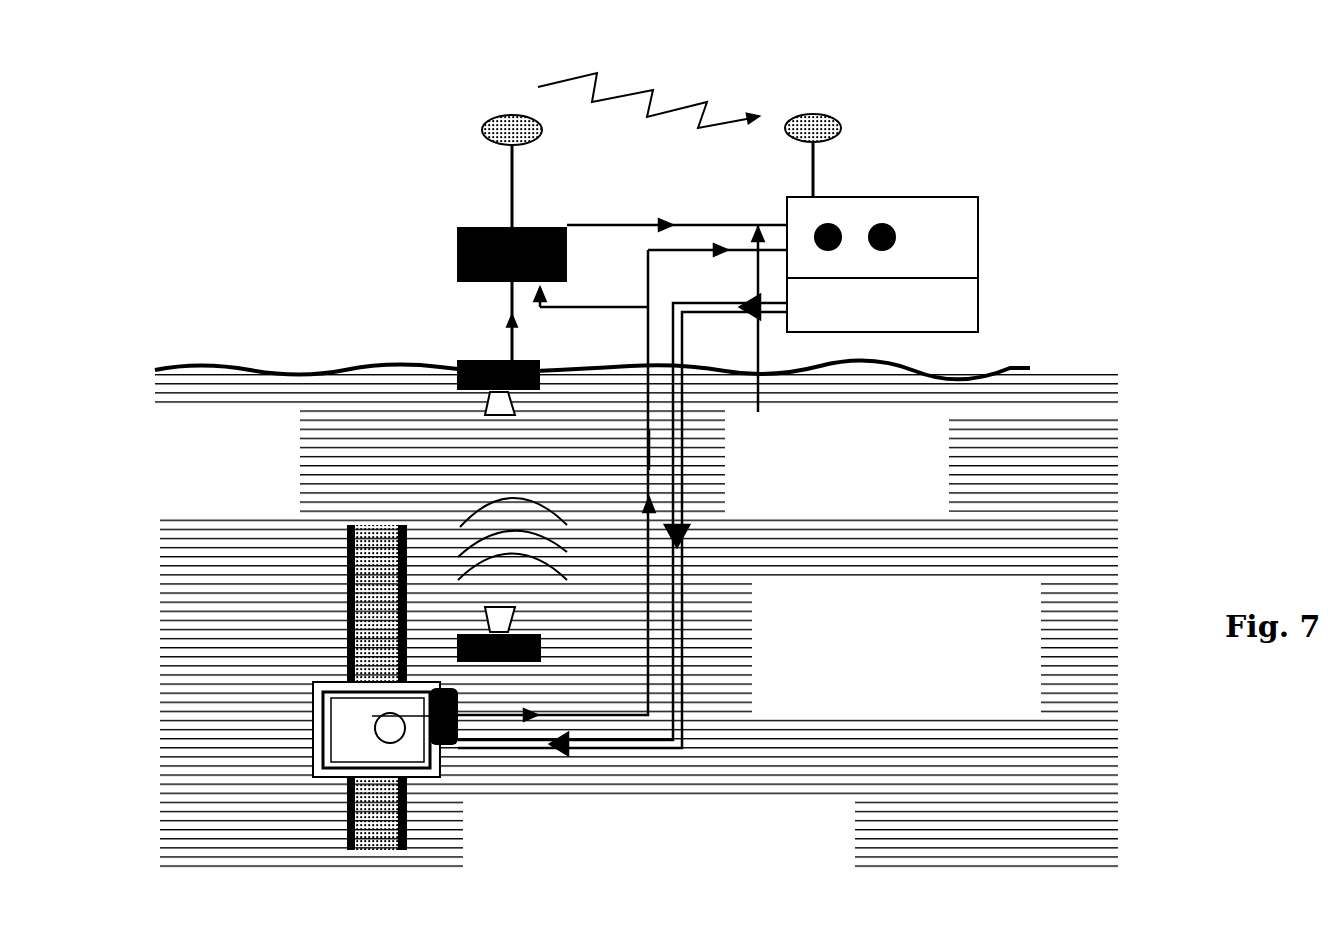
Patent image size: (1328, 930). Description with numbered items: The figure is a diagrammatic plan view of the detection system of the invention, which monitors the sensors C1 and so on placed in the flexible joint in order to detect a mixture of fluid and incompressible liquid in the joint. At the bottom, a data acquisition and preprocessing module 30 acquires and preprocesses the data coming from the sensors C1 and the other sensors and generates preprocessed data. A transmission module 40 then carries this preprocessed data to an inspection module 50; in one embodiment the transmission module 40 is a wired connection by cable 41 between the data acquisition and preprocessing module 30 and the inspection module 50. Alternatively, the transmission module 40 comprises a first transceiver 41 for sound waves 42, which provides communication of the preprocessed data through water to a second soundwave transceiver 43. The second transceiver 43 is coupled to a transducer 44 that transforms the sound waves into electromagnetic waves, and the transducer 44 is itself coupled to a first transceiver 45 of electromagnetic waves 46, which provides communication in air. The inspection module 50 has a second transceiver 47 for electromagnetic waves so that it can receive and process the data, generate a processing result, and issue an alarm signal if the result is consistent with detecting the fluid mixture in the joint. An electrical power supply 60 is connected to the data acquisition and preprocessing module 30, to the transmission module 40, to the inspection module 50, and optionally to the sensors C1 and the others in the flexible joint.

The data acquisition and preprocessing module 30 is at (474, 759).
The transmission module 40 is at (600, 573).
The first transceiver for sound waves 41 is at (661, 468).
The sound waves 42 is at (493, 523).
The second soundwave transceiver 43 is at (476, 352).
The transducer 44 is at (448, 243).
The first transceiver of electromagnetic waves 45 is at (475, 120).
The electromagnetic waves 46 is at (684, 85).
The second transceiver for electromagnetic waves 47 is at (829, 172).
The inspection module 50 is at (990, 225).
The electrical power supply 60 is at (966, 305).
The sensor C1 is at (356, 712).